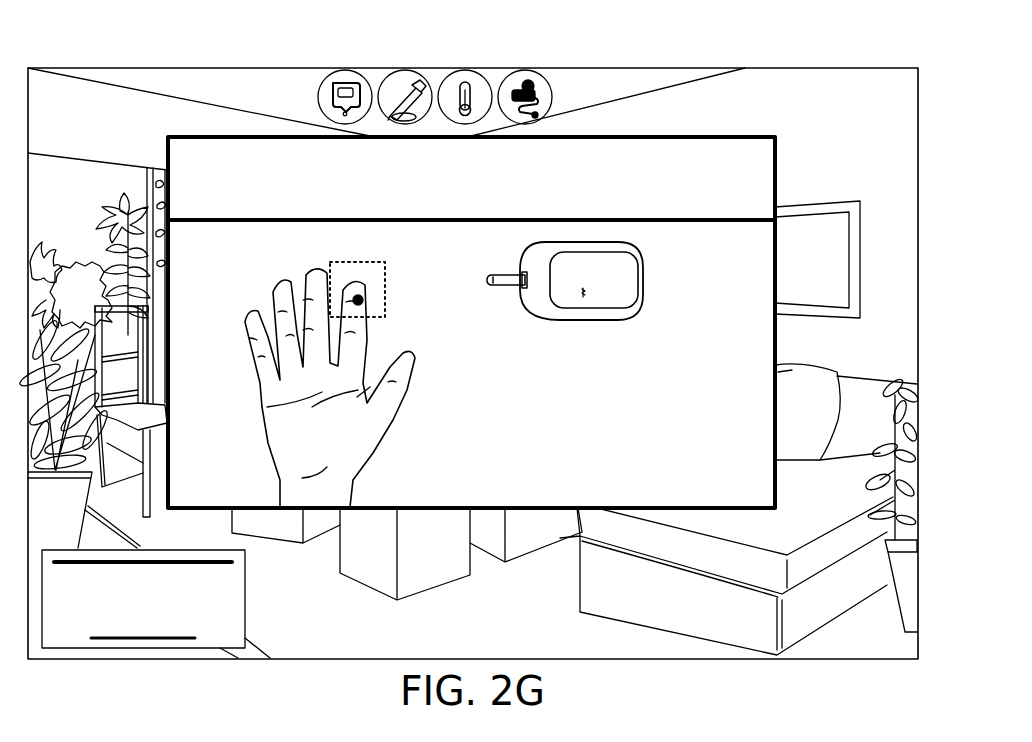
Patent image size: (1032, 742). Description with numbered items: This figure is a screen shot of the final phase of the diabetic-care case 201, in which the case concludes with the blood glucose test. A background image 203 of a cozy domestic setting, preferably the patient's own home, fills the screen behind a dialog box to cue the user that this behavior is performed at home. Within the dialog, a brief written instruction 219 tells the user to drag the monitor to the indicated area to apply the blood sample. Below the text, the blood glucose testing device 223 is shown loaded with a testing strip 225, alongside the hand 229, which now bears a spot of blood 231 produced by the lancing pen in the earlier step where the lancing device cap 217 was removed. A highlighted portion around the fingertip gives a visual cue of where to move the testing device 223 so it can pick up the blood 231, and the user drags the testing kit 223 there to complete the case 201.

The case package 201 is at (720, 66).
The background image 203 is at (823, 107).
The lancing device cap 217 is at (387, 308).
The written instruction 219 is at (187, 153).
The blood glucose testing device 223 is at (645, 270).
The blood glucose testing strip 225 is at (512, 287).
The hand 229 is at (395, 417).
The spot of blood 231 is at (364, 300).